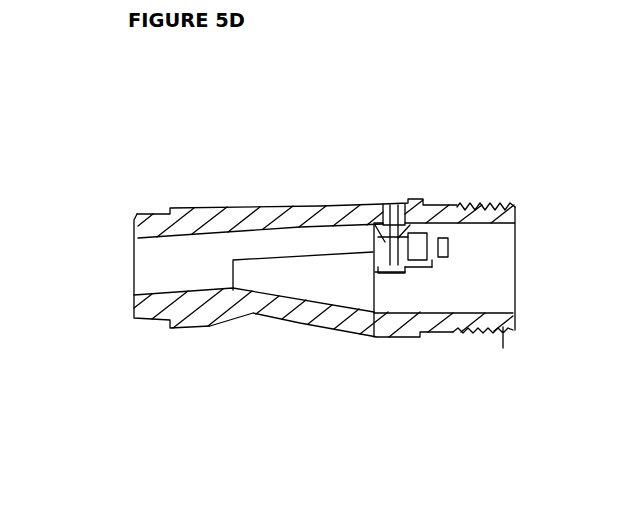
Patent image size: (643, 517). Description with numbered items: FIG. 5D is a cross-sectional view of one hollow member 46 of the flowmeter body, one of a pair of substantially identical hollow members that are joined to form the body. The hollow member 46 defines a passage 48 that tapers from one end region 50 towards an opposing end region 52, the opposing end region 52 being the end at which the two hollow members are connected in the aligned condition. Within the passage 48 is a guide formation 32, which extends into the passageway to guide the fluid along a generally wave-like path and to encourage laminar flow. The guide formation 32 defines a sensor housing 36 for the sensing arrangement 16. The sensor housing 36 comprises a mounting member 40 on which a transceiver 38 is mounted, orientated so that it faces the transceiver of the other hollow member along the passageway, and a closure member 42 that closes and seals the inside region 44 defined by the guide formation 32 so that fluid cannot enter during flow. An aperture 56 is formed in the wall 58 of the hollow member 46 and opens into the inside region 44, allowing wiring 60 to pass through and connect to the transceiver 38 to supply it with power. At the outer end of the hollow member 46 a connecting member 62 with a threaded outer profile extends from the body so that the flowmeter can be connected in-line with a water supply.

The sensing arrangement 16 is at (422, 293).
The guide formation 32 is at (409, 200).
The sensor housing 36 is at (435, 268).
The transceiver 38 is at (403, 227).
The mounting member 40 is at (378, 240).
The closure member 42 is at (443, 233).
The inside region 44 is at (400, 265).
The hollow member 46 is at (310, 128).
The passage 48 is at (268, 275).
The end region 50 is at (548, 197).
The opposing end region 52 is at (122, 198).
The aperture 56 is at (385, 228).
The wall 58 is at (340, 208).
The wiring 60 is at (397, 232).
The connecting member 62 is at (505, 332).